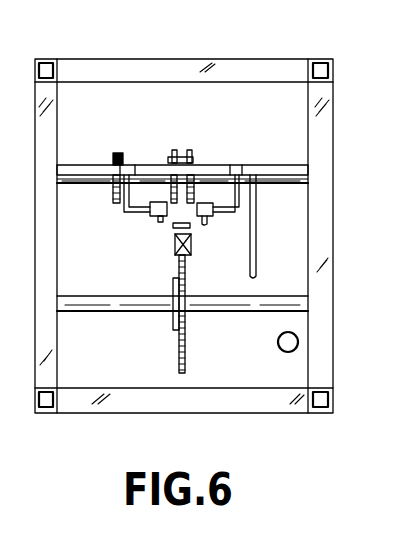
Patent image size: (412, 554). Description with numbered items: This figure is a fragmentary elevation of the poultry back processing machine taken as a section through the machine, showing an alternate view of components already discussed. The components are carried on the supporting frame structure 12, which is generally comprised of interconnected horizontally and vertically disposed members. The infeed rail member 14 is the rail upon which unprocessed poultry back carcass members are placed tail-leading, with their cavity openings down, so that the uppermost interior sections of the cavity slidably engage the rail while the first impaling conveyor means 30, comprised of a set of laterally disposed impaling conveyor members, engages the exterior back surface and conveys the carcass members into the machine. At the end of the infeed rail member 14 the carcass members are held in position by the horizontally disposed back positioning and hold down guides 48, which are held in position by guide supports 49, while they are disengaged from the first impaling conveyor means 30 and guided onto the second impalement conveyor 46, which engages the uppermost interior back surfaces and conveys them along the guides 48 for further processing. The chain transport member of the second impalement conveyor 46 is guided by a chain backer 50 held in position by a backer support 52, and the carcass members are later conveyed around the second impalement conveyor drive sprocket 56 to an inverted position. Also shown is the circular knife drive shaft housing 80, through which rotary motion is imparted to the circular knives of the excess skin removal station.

The supporting frame structure 12 is at (341, 360).
The first impaling conveyor means 30 is at (192, 155).
The guide supports 49 is at (124, 209).
The back positioning and hold down guides 48 is at (158, 221).
The infeed rail member 14 is at (173, 229).
The chain backer 50 is at (192, 245).
The second impalement conveyor 46 is at (177, 240).
The second impalement conveyor drive sprocket 56 is at (181, 336).
The backer support 52 is at (257, 245).
The circular knife drive shaft housing 80 is at (278, 344).